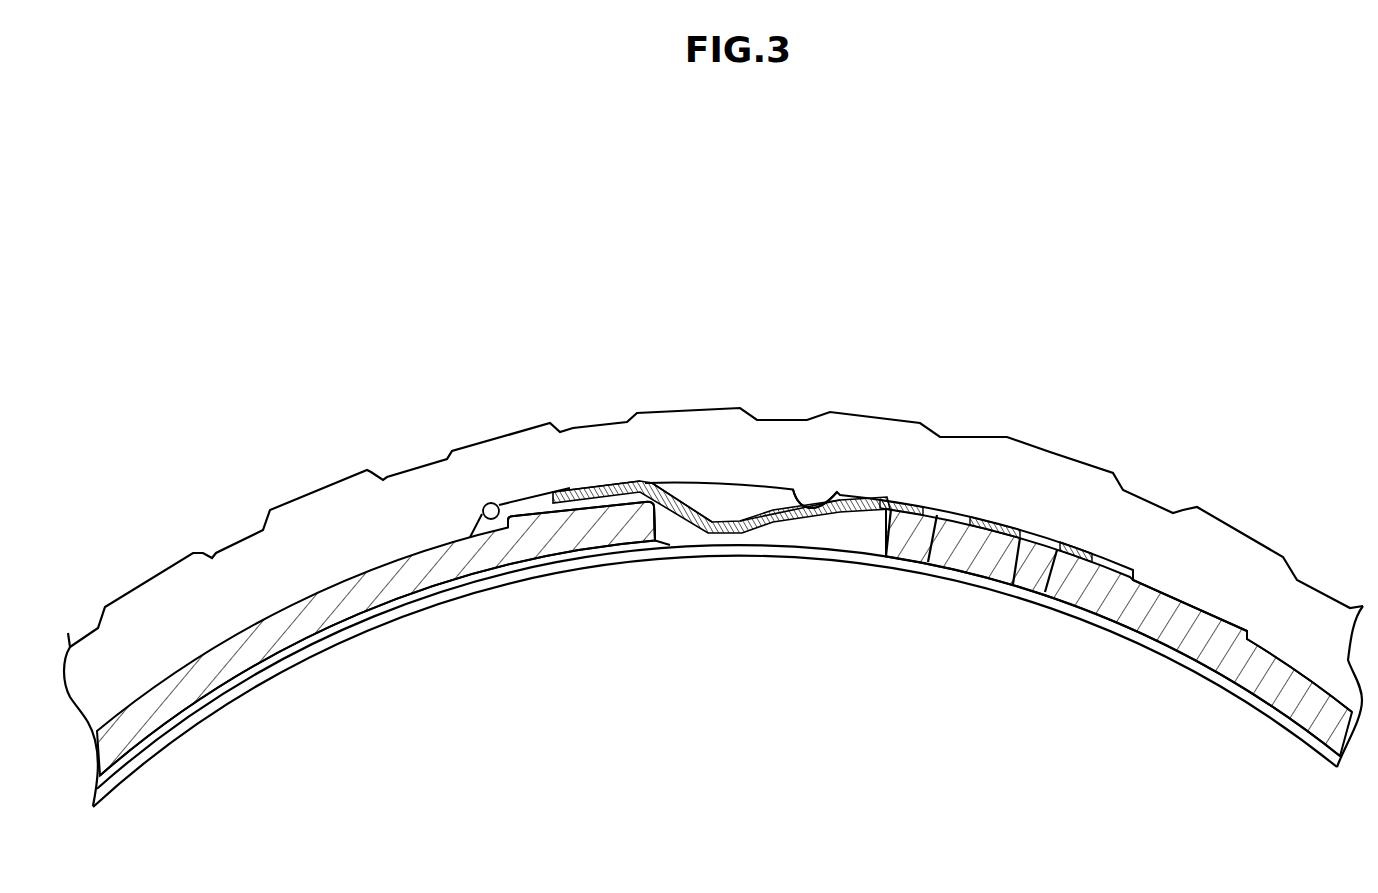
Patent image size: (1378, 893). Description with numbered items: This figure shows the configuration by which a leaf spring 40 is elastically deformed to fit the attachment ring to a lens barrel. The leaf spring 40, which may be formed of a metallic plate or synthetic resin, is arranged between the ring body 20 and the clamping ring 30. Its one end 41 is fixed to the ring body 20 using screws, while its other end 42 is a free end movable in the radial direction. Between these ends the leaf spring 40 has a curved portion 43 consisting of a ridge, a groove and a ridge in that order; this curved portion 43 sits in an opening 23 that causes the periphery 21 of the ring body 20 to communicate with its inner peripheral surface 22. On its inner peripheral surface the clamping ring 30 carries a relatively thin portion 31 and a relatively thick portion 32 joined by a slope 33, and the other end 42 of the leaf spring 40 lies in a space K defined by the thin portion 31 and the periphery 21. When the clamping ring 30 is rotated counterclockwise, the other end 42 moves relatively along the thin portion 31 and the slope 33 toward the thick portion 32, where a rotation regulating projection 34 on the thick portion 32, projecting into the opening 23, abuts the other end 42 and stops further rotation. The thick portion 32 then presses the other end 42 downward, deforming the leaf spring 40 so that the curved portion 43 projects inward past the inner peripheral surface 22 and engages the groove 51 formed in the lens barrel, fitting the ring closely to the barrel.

The ring body 20 is at (437, 577).
The periphery 21 is at (527, 518).
The inner peripheral surface 22 is at (588, 570).
The opening 23 is at (668, 535).
The clamping ring 30 is at (560, 452).
The thin portion 31 is at (480, 506).
The space K is at (526, 503).
The thick portion 32 is at (708, 496).
The slope 33 is at (643, 481).
The rotation regulating projection 34 is at (812, 497).
The leaf spring 40 is at (803, 546).
The one end 41 is at (1003, 513).
The other end 42 is at (620, 483).
The curved portion 43 is at (745, 497).
The groove 51 is at (857, 553).